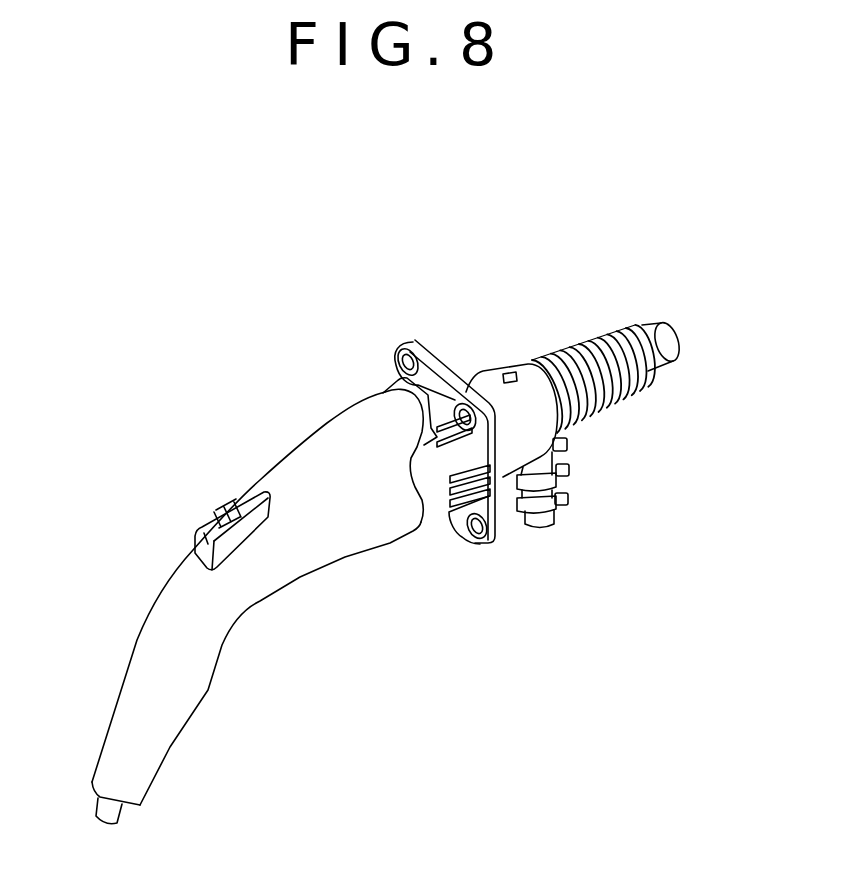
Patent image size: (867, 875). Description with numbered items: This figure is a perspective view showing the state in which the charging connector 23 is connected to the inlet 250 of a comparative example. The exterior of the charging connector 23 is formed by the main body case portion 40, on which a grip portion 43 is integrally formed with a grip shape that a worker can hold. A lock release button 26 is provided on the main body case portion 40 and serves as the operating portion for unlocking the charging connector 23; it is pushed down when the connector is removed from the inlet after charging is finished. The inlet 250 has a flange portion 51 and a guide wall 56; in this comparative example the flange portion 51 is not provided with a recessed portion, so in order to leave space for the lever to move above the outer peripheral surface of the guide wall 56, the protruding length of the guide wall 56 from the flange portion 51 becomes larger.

The charging connector 23 is at (182, 548).
The lock release button 26 is at (247, 498).
The main body case portion 40 is at (310, 553).
The grip portion 43 is at (148, 683).
The flange portion 51 is at (441, 387).
The guide wall 56 is at (437, 485).
The inlet 250 is at (489, 362).